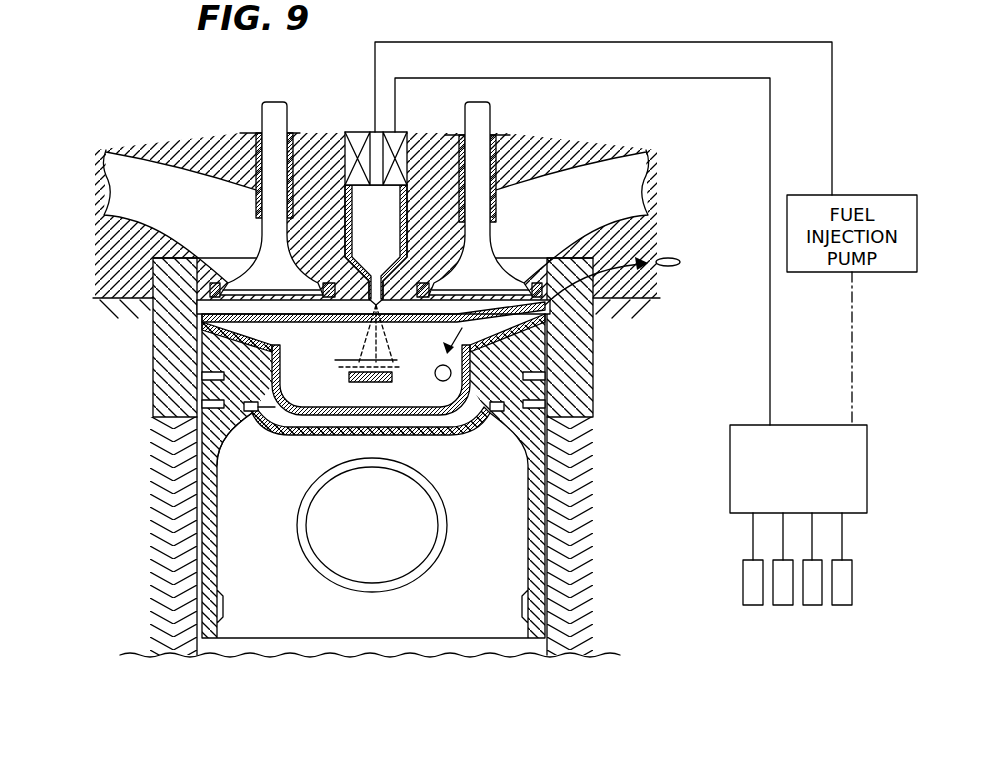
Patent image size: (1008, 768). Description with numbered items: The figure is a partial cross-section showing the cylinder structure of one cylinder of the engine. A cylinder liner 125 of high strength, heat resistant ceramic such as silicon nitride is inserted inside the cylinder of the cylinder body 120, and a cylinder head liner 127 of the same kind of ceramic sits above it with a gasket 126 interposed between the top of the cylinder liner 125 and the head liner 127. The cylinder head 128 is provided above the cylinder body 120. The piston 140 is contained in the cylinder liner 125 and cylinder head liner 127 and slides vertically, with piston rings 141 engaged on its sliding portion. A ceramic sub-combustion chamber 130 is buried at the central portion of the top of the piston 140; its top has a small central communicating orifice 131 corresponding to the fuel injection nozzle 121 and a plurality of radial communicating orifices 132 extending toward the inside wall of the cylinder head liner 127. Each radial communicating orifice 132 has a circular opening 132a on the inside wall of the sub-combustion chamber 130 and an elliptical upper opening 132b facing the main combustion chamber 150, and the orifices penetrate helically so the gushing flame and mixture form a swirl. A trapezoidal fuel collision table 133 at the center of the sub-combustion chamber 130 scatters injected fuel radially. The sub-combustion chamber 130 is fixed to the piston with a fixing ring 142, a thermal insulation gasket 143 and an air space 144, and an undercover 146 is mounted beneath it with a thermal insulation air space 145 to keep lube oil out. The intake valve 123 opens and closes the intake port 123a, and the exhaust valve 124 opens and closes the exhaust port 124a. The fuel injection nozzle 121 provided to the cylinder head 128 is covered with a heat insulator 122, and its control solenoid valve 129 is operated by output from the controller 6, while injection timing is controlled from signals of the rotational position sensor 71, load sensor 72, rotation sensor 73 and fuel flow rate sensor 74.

The controller 6 is at (730, 443).
The rotational position sensor 71 is at (748, 606).
The load sensor 72 is at (783, 606).
The rotation sensor 73 is at (812, 606).
The fuel flow rate sensor 74 is at (842, 606).
The cylinder body 120 is at (167, 596).
The fuel injection nozzle 121 is at (342, 247).
The heat insulator 122 is at (336, 195).
The intake valve 123 is at (253, 248).
The intake port 123a is at (170, 160).
The exhaust valve 124 is at (484, 260).
The exhaust port 124a is at (588, 163).
The cylinder liner 125 is at (173, 518).
The gasket 126 is at (152, 418).
The cylinder head liner 127 is at (582, 328).
The cylinder head 128 is at (136, 242).
The fuel injection nozzle control solenoid valve 129 is at (410, 157).
The sub-combustion chamber 130 is at (418, 397).
The central communicating orifice 131 is at (365, 328).
The radial communicating orifice 132 is at (287, 344).
The opening of the radial communicating orifice 132a is at (447, 382).
The upper opening of the radial communicating orifice 132b is at (664, 270).
The fuel collision table 133 is at (356, 428).
The piston 140 is at (548, 452).
The piston rings 141 is at (545, 378).
The fixing ring 142 is at (260, 412).
The thermal insulation gasket 143 is at (228, 345).
The air space 144 is at (262, 370).
The thermal insulation air space 145 is at (283, 425).
The undercover 146 is at (393, 440).
The main combustion chamber 150 is at (218, 310).